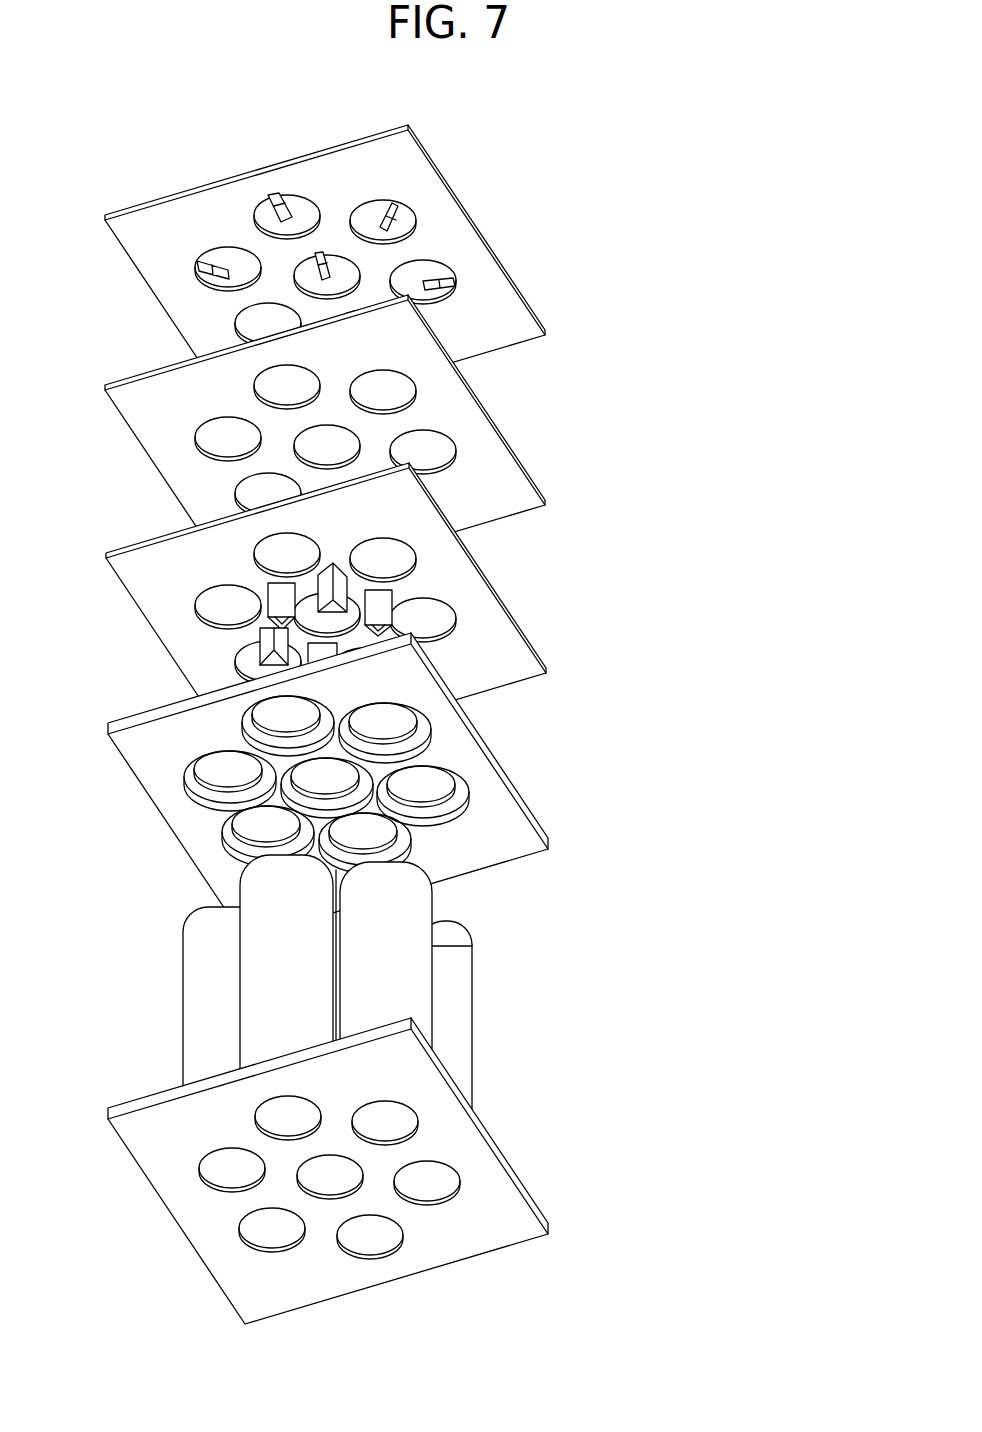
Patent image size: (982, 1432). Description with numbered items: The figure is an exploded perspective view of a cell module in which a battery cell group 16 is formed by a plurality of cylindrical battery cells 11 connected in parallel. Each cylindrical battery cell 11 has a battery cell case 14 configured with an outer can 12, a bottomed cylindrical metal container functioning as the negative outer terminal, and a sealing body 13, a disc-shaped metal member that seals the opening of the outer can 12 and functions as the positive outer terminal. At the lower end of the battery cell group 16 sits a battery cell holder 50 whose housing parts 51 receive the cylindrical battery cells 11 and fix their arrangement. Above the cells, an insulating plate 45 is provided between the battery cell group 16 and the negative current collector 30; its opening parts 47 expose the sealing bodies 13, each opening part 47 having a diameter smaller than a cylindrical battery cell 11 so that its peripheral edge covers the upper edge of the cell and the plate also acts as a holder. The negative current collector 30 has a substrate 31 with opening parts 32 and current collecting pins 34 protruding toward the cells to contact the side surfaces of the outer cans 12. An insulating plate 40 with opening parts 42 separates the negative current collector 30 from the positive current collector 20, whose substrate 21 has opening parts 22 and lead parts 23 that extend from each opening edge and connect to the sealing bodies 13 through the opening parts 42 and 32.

The positive current collector 20 is at (359, 258).
The substrate 21 is at (507, 325).
The opening part 22 is at (358, 206).
The lead part 23 is at (382, 225).
The insulating plate 40 is at (375, 445).
The opening part 42 is at (443, 467).
The negative current collector 30 is at (370, 613).
The substrate 31 is at (507, 663).
The opening part 32 is at (443, 635).
The current collecting pin 34 is at (273, 592).
The insulating plate 45 is at (362, 786).
The opening part 47 is at (458, 813).
The cylindrical battery cell 11 is at (326, 987).
The outer can 12 is at (473, 1000).
The sealing body 13 is at (463, 925).
The battery cell case 14 is at (514, 1016).
The battery cell group 16 is at (352, 1171).
The battery cell holder 50 is at (352, 1171).
The housing part 51 is at (450, 1192).